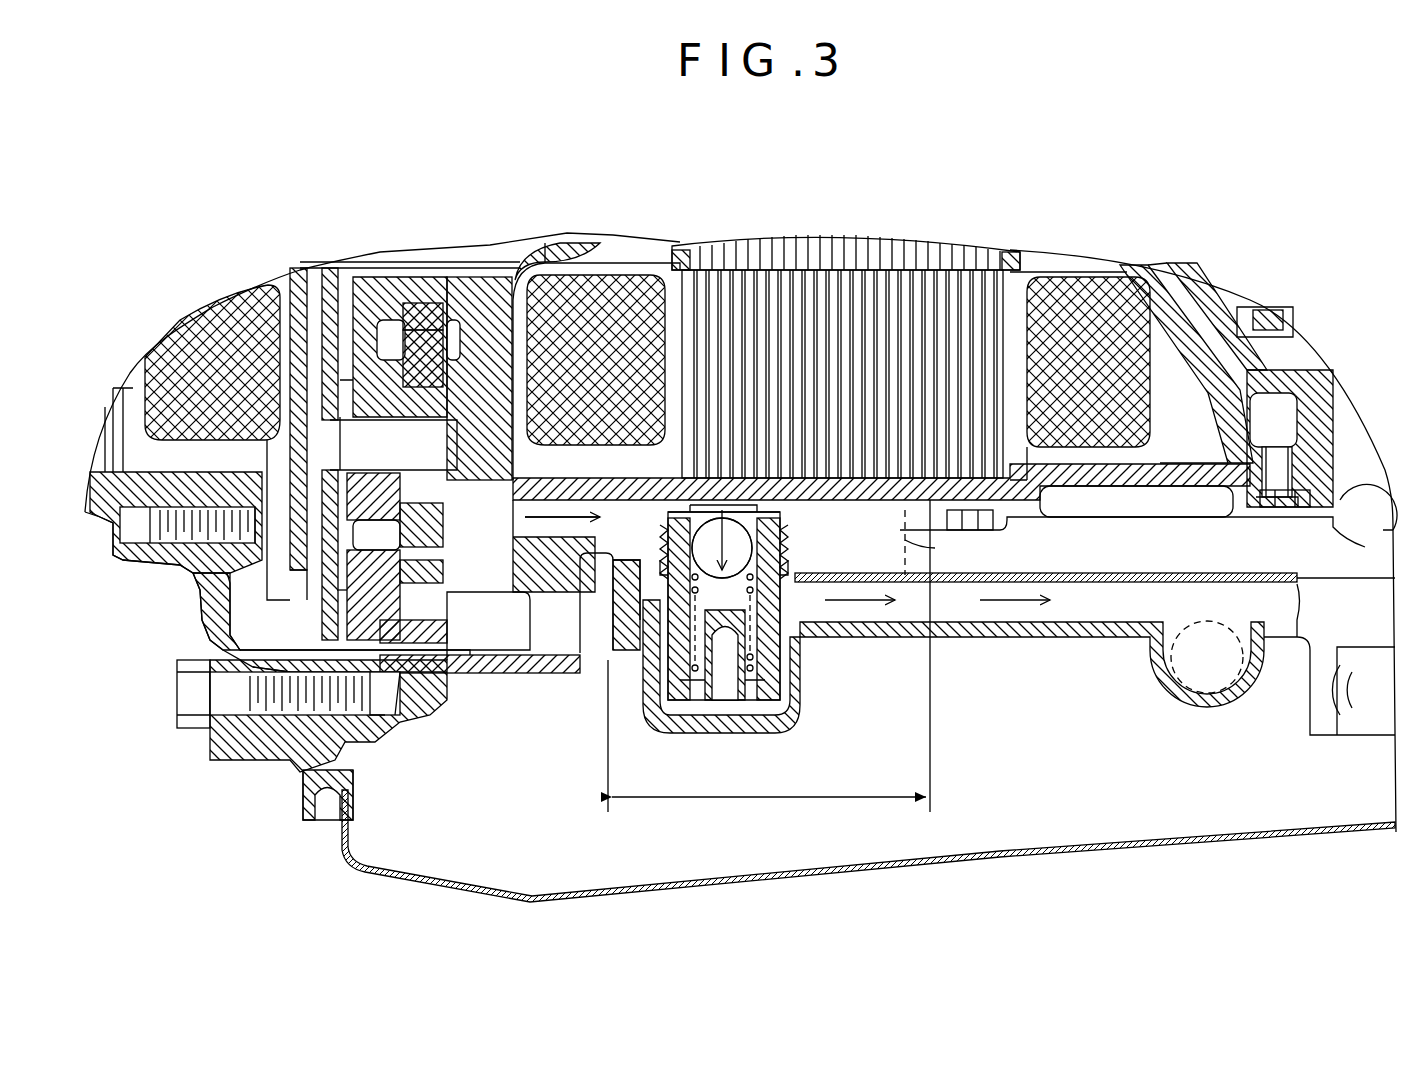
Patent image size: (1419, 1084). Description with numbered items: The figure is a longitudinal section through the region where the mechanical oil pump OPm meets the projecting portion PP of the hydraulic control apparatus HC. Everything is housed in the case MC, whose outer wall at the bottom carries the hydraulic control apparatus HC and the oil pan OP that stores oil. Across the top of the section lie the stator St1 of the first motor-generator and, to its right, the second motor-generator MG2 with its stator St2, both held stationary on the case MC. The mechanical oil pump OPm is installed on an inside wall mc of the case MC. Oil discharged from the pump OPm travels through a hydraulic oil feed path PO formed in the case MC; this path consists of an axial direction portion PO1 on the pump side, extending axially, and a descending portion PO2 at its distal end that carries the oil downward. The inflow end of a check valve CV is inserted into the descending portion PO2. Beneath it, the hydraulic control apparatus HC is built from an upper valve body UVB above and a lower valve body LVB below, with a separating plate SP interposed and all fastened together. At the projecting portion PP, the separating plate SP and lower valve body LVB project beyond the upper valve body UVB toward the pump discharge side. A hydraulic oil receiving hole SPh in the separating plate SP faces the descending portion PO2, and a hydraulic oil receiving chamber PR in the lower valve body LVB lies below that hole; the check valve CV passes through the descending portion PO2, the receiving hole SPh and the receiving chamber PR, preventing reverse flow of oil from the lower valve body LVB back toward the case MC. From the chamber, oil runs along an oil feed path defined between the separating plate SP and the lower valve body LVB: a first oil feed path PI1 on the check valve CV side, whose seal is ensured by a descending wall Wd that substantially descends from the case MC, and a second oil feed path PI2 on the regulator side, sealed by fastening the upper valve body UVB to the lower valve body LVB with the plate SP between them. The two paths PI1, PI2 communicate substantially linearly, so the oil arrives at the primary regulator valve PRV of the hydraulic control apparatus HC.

The stator St1 is at (190, 327).
The stator St2 is at (1050, 277).
The inside wall mc is at (482, 282).
The hydraulic oil feed path PO is at (641, 180).
The axial direction portion PO1 is at (562, 515).
The descending portion PO2 is at (683, 513).
The second motor-generator MG2 is at (1136, 298).
The separating plate SP is at (1183, 573).
The hydraulic oil receiving hole SPh is at (792, 554).
The descending wall Wd is at (938, 550).
The mechanical oil pump OPm is at (345, 590).
The lower valve body LVB is at (612, 604).
The hydraulic oil receiving chamber PR is at (672, 690).
The check valve CV is at (772, 682).
The first oil feed path PI1 is at (853, 607).
The second oil feed path PI2 is at (1010, 603).
The hydraulic control apparatus HC is at (950, 665).
The upper valve body UVB is at (1093, 550).
The primary regulator valve PRV is at (1235, 677).
The projecting portion PP is at (767, 744).
The case MC is at (297, 762).
The oil pan OP is at (1018, 866).